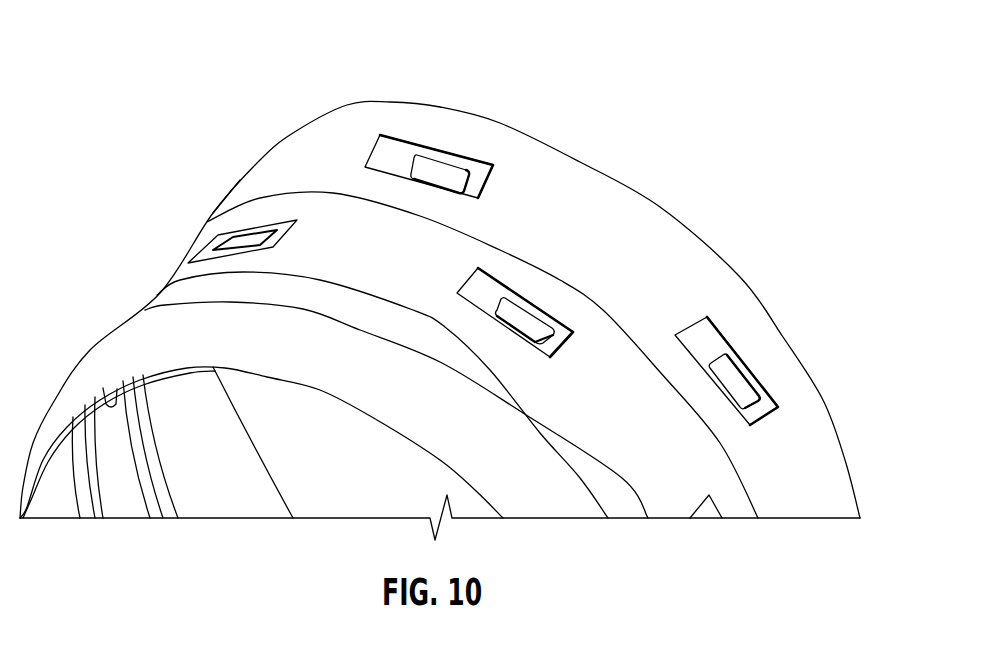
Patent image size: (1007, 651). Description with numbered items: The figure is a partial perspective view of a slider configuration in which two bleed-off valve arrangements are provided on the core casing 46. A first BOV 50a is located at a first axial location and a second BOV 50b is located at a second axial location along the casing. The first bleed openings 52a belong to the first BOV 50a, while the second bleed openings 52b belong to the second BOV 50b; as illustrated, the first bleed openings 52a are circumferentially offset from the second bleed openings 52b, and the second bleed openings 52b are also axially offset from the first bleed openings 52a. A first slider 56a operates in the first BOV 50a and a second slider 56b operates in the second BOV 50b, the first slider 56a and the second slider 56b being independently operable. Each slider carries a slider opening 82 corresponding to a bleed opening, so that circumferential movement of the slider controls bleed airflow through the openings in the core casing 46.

The core casing 46 is at (795, 383).
The first BOV 50a is at (120, 265).
The second BOV 50b is at (250, 28).
The first bleed openings 52a is at (283, 236).
The second bleed openings 52b is at (497, 142).
The first slider 56a is at (560, 333).
The second slider 56b is at (718, 328).
The slider opening 82 is at (520, 312).